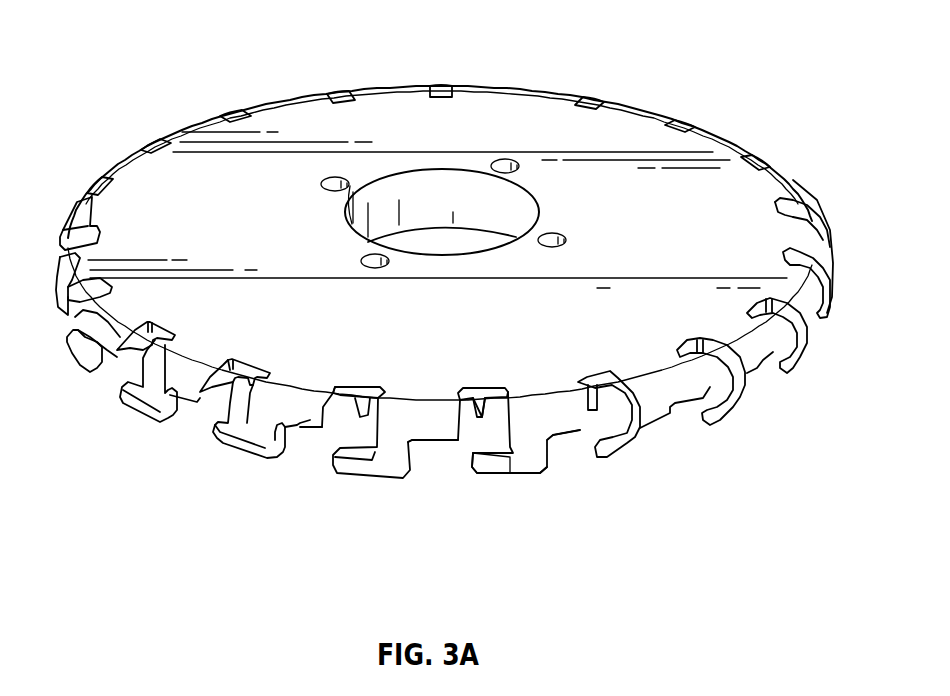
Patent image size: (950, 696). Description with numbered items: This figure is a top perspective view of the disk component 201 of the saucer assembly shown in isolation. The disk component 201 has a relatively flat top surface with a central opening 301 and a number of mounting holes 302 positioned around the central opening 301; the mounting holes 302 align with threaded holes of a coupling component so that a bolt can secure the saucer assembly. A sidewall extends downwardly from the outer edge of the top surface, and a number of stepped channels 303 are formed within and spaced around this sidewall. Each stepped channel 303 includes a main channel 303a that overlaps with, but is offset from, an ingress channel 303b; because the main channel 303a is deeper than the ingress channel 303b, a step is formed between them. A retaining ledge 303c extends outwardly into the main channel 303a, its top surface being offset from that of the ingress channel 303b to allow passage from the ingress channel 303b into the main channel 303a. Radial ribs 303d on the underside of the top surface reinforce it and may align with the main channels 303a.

The disk component 201 is at (150, 40).
The central opening 301 is at (516, 205).
The mounting holes 302 is at (493, 161).
The stepped channels 303 is at (190, 435).
The main channel 303a is at (445, 408).
The ingress channel 303b is at (418, 435).
The retaining ledge 303c is at (505, 468).
The radial ribs 303d is at (478, 418).